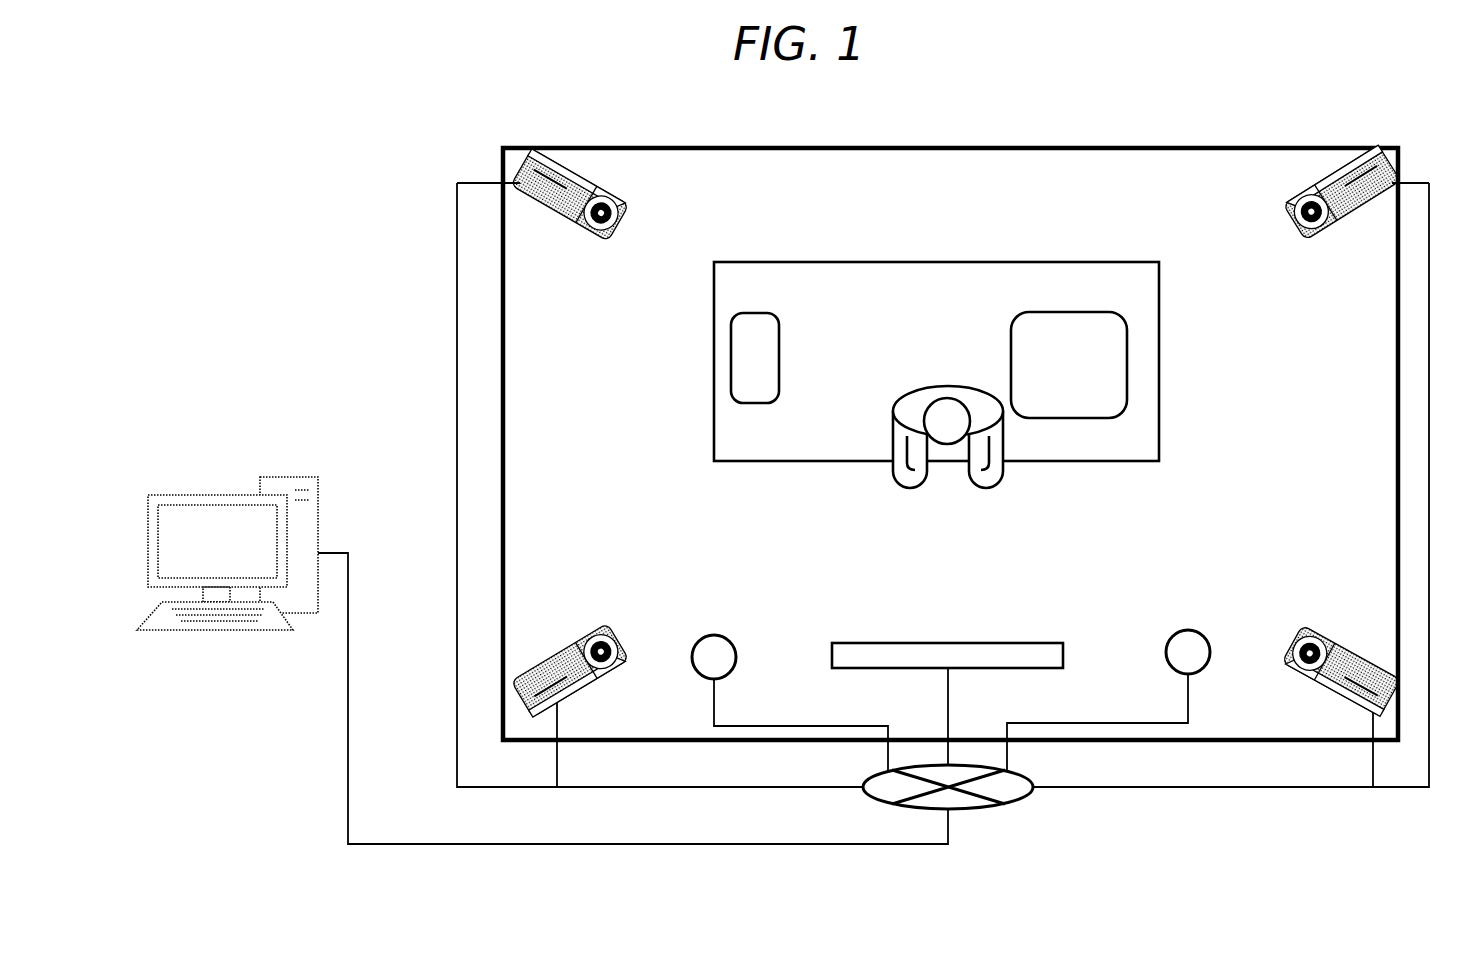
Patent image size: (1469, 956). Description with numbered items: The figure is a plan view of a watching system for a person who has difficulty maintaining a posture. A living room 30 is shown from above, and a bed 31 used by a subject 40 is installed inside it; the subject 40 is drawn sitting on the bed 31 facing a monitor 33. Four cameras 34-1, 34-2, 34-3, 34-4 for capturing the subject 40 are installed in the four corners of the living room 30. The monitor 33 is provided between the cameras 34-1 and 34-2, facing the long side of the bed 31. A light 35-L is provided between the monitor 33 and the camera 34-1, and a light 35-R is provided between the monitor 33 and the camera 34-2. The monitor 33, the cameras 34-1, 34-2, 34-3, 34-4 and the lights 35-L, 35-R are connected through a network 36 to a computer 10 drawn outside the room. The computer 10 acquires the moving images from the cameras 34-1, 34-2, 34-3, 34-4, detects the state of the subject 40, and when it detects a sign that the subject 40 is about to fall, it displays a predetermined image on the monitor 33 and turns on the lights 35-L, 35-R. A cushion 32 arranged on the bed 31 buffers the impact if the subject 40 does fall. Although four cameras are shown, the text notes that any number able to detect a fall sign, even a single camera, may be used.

The computer 10 is at (271, 478).
The living room 30 is at (757, 147).
The bed 31 is at (780, 260).
The cushion 32 is at (1128, 318).
The monitor 33 is at (907, 643).
The camera 34-1 is at (567, 645).
The camera 34-2 is at (1337, 638).
The camera 34-3 is at (562, 217).
The camera 34-4 is at (1330, 227).
The light 35-L is at (713, 634).
The light 35-R is at (1185, 628).
The network 36 is at (1013, 805).
The subject 40 is at (992, 488).